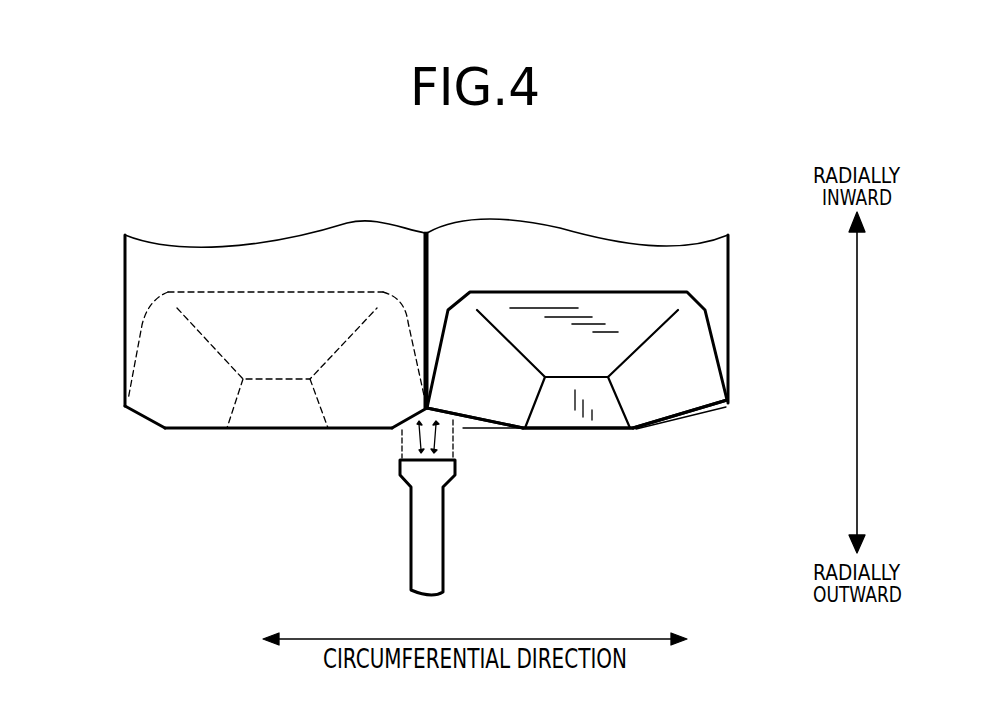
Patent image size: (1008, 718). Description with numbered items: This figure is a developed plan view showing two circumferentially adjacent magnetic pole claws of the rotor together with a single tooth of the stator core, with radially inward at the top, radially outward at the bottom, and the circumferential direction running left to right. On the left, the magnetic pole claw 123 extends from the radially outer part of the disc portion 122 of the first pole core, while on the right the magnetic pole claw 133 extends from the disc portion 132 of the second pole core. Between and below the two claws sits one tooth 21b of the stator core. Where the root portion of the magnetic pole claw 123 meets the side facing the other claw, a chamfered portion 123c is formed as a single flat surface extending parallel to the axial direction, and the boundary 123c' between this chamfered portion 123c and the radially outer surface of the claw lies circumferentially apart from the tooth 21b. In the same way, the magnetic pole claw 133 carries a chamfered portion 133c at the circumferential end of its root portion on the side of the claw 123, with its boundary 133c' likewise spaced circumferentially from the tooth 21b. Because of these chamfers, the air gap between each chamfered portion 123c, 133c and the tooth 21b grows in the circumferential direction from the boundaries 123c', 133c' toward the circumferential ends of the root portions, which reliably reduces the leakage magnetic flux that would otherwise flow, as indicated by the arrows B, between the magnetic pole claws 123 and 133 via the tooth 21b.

The disc portion 122 is at (153, 272).
The magnetic pole claw 123 is at (187, 373).
The chamfered portion 123c is at (232, 444).
The boundary 123c' is at (278, 446).
The disc portion 132 is at (718, 270).
The magnetic pole claw 133 is at (667, 379).
The chamfered portion 133c is at (629, 439).
The boundary 133c' is at (550, 443).
The tooth 21b is at (433, 495).
The arrows B is at (415, 433).